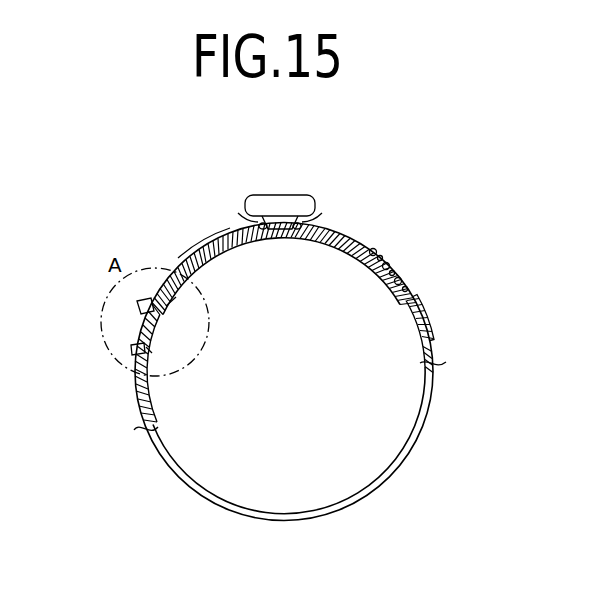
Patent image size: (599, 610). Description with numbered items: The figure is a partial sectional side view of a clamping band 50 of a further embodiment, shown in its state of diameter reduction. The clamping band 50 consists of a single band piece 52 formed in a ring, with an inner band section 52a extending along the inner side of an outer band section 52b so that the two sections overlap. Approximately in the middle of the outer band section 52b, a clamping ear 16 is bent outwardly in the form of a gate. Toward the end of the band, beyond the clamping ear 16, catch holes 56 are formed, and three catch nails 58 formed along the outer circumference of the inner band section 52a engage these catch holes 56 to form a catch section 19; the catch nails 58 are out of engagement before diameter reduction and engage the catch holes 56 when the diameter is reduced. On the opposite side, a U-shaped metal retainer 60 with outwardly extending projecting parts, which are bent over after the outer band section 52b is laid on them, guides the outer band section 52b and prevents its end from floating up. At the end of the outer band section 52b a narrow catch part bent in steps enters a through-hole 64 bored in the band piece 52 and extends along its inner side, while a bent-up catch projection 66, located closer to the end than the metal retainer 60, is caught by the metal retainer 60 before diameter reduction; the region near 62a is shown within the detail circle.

The clamping band 50 is at (373, 499).
The band piece 52 is at (287, 521).
The inner band section 52a is at (406, 311).
The outer band section 52b is at (178, 262).
The clamping ear 16 is at (291, 195).
The catch section 19 is at (370, 283).
The catch holes 56 is at (369, 248).
The catch nails 58 is at (381, 257).
The metal retainer 60 is at (174, 301).
The hook opening 62a is at (146, 353).
The through-hole 64 is at (138, 357).
The catch projection 66 is at (139, 306).